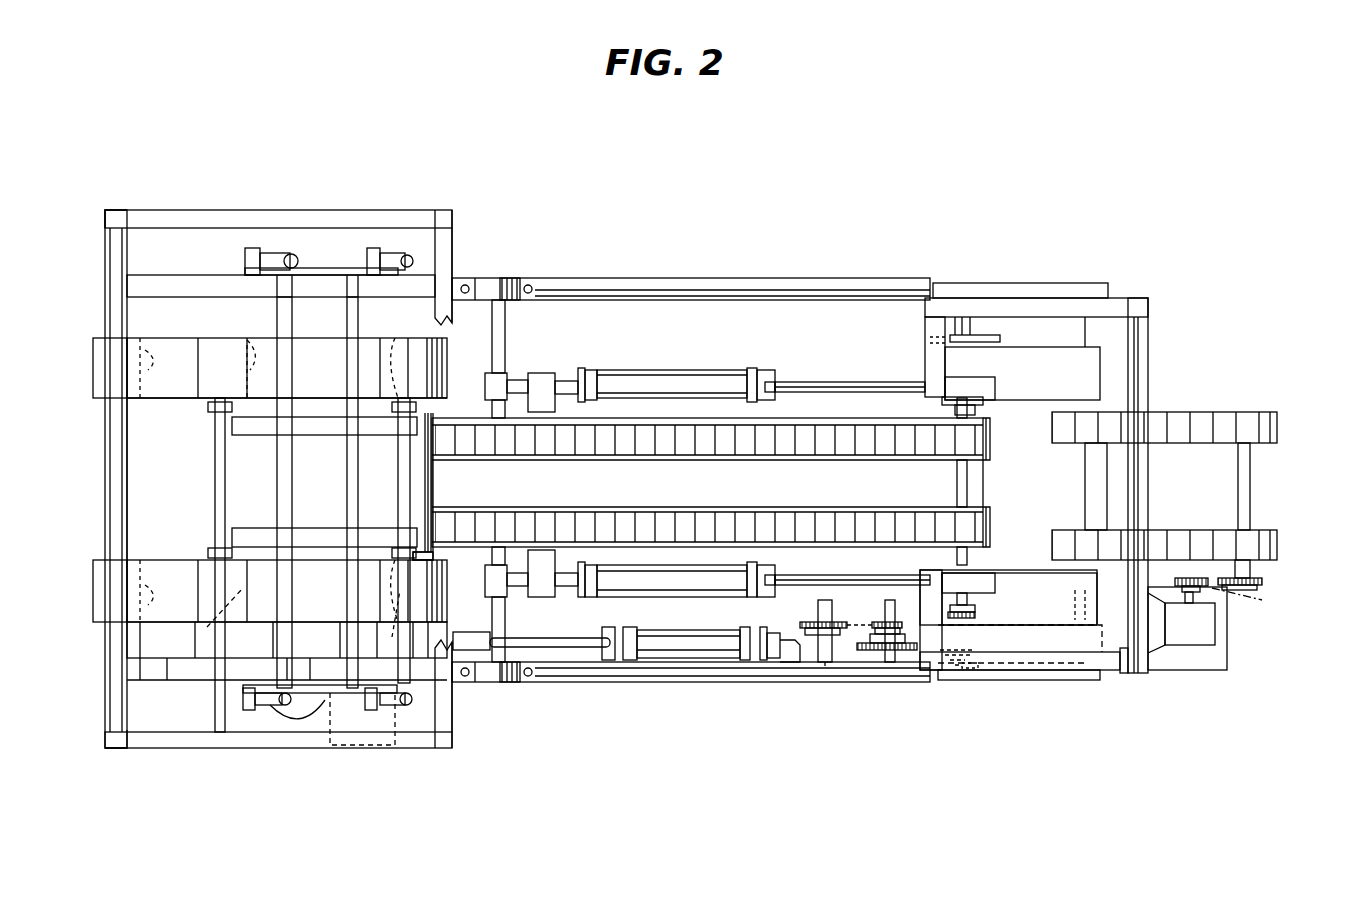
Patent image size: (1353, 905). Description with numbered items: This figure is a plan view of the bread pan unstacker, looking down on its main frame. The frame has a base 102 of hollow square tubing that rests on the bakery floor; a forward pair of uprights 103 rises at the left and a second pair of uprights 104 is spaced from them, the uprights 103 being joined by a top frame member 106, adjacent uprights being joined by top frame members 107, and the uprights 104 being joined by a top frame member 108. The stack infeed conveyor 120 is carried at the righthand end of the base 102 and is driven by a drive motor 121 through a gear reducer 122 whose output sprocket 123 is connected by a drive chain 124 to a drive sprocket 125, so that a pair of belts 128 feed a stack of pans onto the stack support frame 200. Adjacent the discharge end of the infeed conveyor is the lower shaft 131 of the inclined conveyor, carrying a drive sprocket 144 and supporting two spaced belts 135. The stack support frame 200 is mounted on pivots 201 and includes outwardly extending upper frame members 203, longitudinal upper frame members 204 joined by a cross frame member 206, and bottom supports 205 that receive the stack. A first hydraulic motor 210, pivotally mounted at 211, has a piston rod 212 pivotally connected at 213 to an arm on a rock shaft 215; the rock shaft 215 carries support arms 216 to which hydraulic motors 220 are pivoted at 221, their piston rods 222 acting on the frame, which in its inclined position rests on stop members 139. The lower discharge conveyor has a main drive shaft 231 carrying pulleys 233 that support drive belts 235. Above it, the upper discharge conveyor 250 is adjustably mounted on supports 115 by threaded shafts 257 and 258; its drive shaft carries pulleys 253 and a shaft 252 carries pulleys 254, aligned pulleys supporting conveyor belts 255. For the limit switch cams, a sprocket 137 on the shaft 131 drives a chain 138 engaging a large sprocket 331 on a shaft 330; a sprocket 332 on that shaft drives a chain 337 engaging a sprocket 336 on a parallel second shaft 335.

The base 102 is at (677, 290).
The uprights 103 is at (115, 212).
The uprights 104 is at (448, 215).
The top frame member 106 is at (112, 476).
The top frame members 107 is at (228, 218).
The top frame member 108 is at (452, 262).
The supports 115 is at (318, 268).
The stack infeed conveyor 120 is at (1268, 402).
The drive motor 121 is at (1118, 655).
The gear reducer 122 is at (1195, 640).
The output sprocket 123 is at (1205, 592).
The drive chain 124 is at (1239, 596).
The drive sprocket 125 is at (1262, 582).
The belts 128 is at (1200, 412).
The lower shaft 131 is at (957, 488).
The belts 135 is at (802, 525).
The sprocket 137 is at (970, 670).
The chain 138 is at (952, 665).
The stop members 139 is at (562, 406).
The drive sprocket 144 is at (975, 330).
The stack support frame 200 is at (915, 343).
The pivots 201 is at (960, 390).
The upper frame members 203 is at (920, 335).
The upper frame members 204 is at (1003, 300).
The bottom supports 205 is at (1045, 360).
The cross frame member 206 is at (1150, 352).
The first hydraulic motor 210 is at (708, 660).
The pivotal mounting 211 is at (783, 660).
The piston rod 212 is at (562, 650).
The pivotal connection 213 is at (449, 585).
The rock shaft 215 is at (506, 338).
The support arms 216 is at (512, 385).
The hydraulic motors 220 is at (670, 372).
The pivotal connection 221 is at (580, 368).
The piston rod 222 is at (810, 385).
The main drive shaft 231 is at (128, 503).
The pulleys 233 is at (125, 360).
The drive belts 235 is at (187, 338).
The upper discharge conveyor 250 is at (130, 410).
The shaft 252 is at (433, 485).
The pulleys 253 is at (250, 340).
The pulleys 254 is at (402, 480).
The conveyor belts 255 is at (270, 340).
The threaded shafts 257 is at (285, 257).
The threaded shafts 258 is at (372, 253).
The shaft 330 is at (889, 600).
The large sprocket 331 is at (877, 650).
The sprocket 332 is at (893, 624).
The second shaft 335 is at (798, 623).
The sprocket 336 is at (810, 665).
The chain 337 is at (858, 647).